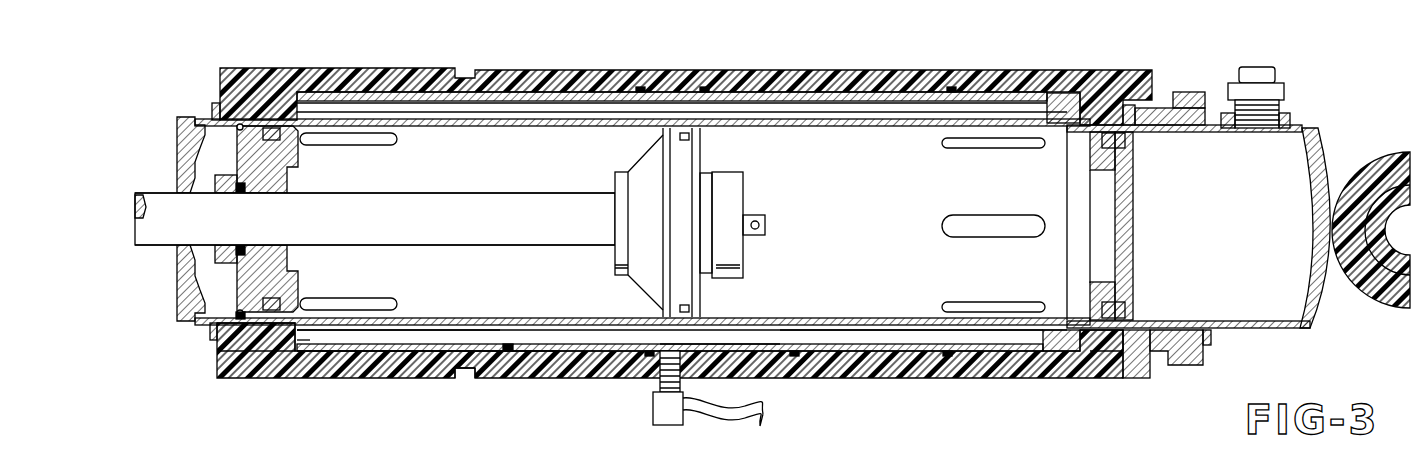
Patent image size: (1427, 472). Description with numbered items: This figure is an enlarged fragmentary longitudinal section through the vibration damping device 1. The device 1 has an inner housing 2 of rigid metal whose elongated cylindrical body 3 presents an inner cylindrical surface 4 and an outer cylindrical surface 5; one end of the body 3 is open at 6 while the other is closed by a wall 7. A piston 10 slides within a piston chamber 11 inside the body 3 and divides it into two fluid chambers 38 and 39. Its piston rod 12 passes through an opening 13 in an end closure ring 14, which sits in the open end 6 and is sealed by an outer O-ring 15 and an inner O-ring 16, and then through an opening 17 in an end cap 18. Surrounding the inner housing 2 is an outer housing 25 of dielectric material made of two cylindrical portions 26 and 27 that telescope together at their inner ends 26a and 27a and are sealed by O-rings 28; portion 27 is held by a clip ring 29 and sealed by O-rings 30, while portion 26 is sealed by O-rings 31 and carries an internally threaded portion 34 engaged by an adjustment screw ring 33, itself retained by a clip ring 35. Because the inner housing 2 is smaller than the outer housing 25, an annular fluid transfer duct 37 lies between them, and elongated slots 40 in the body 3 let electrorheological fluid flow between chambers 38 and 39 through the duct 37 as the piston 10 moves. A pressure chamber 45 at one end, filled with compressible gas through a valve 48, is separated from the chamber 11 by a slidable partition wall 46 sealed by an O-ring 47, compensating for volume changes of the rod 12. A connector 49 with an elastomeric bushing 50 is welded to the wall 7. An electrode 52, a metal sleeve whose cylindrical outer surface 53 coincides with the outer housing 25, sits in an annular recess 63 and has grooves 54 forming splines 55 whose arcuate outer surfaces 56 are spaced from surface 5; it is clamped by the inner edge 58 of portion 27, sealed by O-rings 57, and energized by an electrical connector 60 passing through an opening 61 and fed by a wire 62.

The vibration damping device 1 is at (208, 56).
The inner housing 2 is at (1280, 331).
The cylindrical body 3 is at (862, 318).
The inner cylindrical surface 4 is at (557, 52).
The outer cylindrical surface 5 is at (970, 52).
The open end 6 is at (215, 137).
The wall 7 is at (1320, 140).
The piston 10 is at (680, 243).
The piston chamber 11 is at (828, 326).
The piston rod 12 is at (468, 232).
The opening 13 is at (276, 198).
The end closure ring 14 is at (282, 245).
The outer O-ring 15 is at (275, 312).
The inner O-ring 16 is at (243, 250).
The opening 17 is at (185, 238).
The end cap 18 is at (178, 170).
The outer housing 25 is at (1055, 381).
The cylindrical portion 26 is at (912, 378).
The inner end 26a is at (465, 377).
The cylindrical portion 27 is at (328, 376).
The inner end 27a is at (508, 343).
The O-rings 28 is at (518, 352).
The clip ring 29 is at (210, 336).
The O-rings 30 is at (248, 330).
The O-rings 31 is at (1092, 332).
The adjustment screw ring 33 is at (1188, 366).
The internally threaded portion 34 is at (1140, 372).
The clip ring 35 is at (1212, 340).
The fluid transfer duct 37 is at (380, 326).
The fluid chamber 38 is at (537, 165).
The fluid chamber 39 is at (869, 220).
The elongated slots 40 is at (350, 148).
The pressure chamber 45 is at (1258, 262).
The partition wall 46 is at (1134, 180).
The O-ring 47 is at (1122, 306).
The valve 48 is at (1286, 92).
The connector 49 is at (1383, 165).
The elastomeric bushing 50 is at (1370, 192).
The electrode 52 is at (790, 92).
The cylindrical outer surface 53 is at (738, 92).
The grooves 54 is at (530, 120).
The splines 55 is at (885, 127).
The arcuate outer surface 56 is at (420, 127).
The O-rings 57 is at (640, 88).
The inner edge 58 is at (300, 344).
The electrical connector 60 is at (672, 426).
The opening 61 is at (660, 378).
The wire 62 is at (752, 430).
The annular recess 63 is at (785, 352).